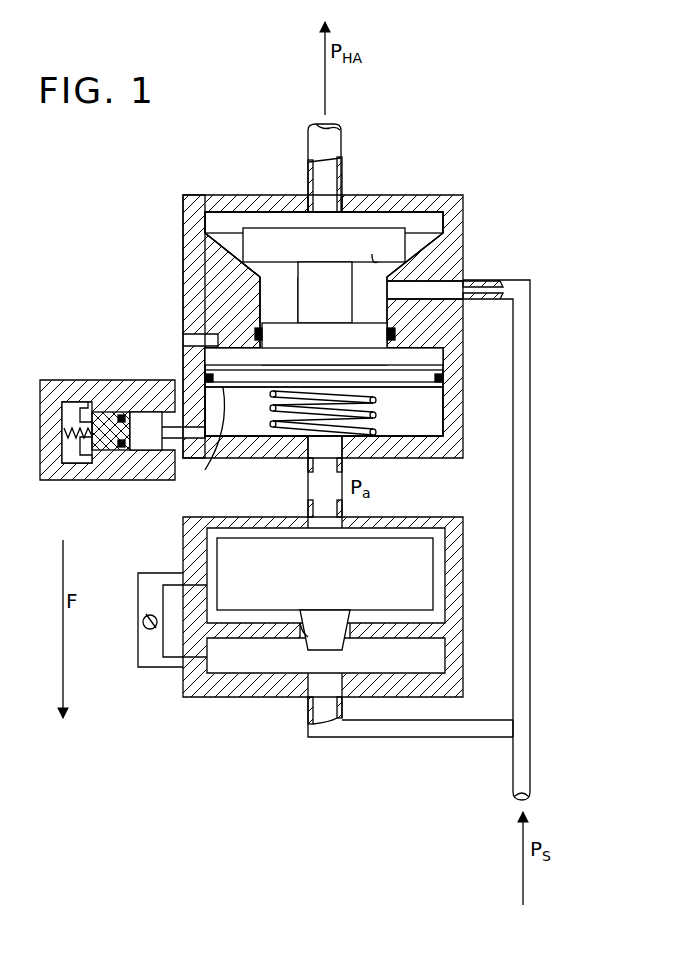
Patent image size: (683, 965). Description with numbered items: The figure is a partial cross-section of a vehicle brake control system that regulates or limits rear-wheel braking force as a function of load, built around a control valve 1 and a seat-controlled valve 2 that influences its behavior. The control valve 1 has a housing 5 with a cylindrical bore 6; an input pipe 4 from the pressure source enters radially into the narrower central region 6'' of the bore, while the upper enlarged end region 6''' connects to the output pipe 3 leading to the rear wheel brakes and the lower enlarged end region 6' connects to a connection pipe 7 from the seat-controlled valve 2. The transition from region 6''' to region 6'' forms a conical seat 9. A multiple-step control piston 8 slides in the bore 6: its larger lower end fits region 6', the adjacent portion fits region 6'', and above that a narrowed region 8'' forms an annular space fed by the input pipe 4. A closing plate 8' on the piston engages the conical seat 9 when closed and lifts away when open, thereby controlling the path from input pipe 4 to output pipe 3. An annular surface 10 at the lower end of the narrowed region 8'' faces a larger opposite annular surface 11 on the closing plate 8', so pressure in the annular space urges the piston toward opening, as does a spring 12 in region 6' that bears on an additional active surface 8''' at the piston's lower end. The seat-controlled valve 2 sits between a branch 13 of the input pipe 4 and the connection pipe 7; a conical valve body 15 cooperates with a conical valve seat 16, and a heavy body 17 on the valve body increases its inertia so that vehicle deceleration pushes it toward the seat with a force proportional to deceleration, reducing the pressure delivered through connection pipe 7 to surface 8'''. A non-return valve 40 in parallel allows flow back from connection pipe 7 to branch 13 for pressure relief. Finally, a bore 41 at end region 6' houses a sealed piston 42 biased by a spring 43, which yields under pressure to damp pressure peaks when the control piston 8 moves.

The control valve 1 is at (467, 358).
The seat-controlled valve 2 is at (466, 590).
The output pipe 3 is at (316, 140).
The input pipe 4 is at (528, 372).
The housing 5 is at (196, 302).
The cylindrical bore 6 is at (324, 324).
The axial end region of bore 6' is at (350, 411).
The central region of bore 6'' is at (260, 295).
The axial end region of bore 6''' is at (324, 197).
The connection pipe 7 is at (307, 484).
The control piston 8 is at (317, 327).
The closing plate 8' is at (308, 207).
The narrowed region 8'' is at (325, 292).
The additional active surface 8''' is at (208, 444).
The conical seat 9 is at (423, 268).
The annular surface 10 is at (395, 310).
The annular surface 11 is at (374, 245).
The spring 12 is at (366, 414).
The branch 13 is at (386, 730).
The conical valve body 15 is at (325, 626).
The conical valve seat 16 is at (305, 640).
The heavy body 17 is at (400, 590).
The non-return valve 40 is at (146, 616).
The bore 41 is at (146, 440).
The piston 42 is at (112, 412).
The spring 43 is at (70, 448).